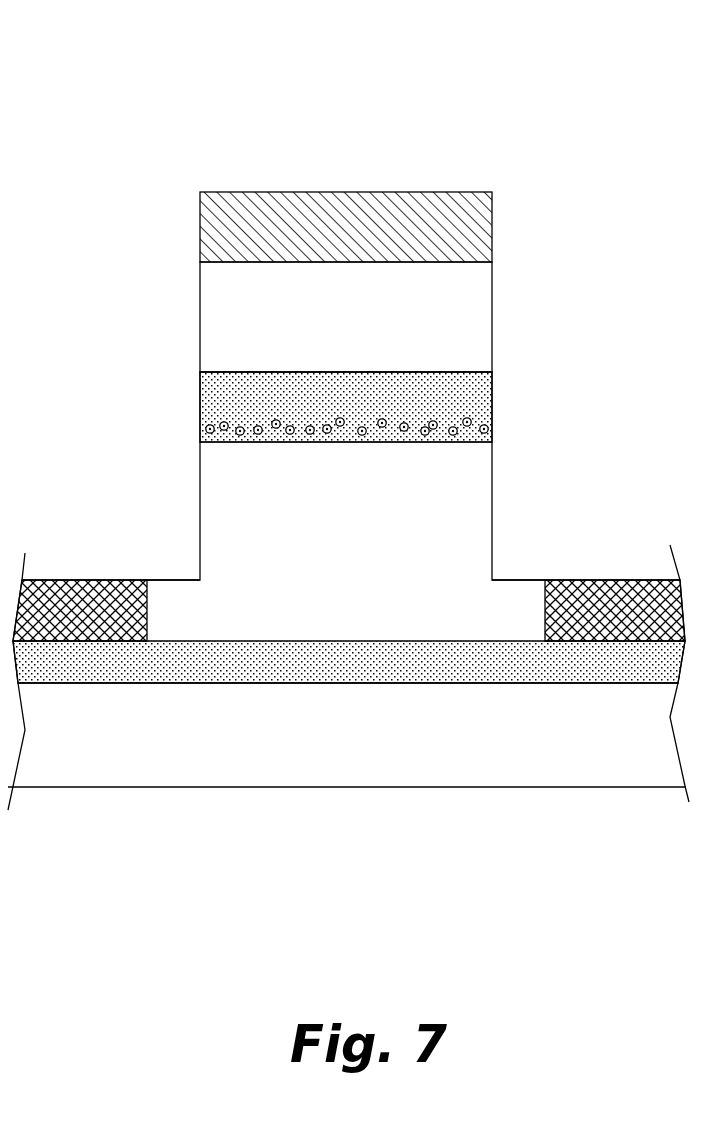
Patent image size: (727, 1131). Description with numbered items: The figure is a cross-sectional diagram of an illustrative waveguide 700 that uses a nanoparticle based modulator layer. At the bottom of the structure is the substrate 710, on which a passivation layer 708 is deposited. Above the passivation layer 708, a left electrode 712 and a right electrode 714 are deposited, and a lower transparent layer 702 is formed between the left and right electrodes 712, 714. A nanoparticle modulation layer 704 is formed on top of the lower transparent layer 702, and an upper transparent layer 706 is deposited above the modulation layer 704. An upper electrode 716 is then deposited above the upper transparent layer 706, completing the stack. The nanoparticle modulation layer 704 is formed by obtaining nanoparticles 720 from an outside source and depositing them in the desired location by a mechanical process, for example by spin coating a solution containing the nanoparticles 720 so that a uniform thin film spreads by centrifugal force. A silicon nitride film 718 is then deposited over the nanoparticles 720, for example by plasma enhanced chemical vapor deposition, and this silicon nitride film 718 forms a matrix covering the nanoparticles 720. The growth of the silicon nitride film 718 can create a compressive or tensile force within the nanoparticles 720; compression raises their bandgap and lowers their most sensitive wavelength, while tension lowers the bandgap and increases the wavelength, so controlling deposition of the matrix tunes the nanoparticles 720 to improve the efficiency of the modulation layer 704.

The waveguide 700 is at (104, 103).
The lower transparent layer 702 is at (360, 534).
The nanoparticle modulation layer 704 is at (363, 407).
The upper transparent layer 706 is at (363, 319).
The passivation layer 708 is at (363, 671).
The substrate 710 is at (363, 742).
The left electrode 712 is at (93, 624).
The right electrode 714 is at (633, 621).
The upper electrode 716 is at (363, 234).
The silicon nitride film 718 is at (492, 405).
The nanoparticles 720 is at (489, 431).